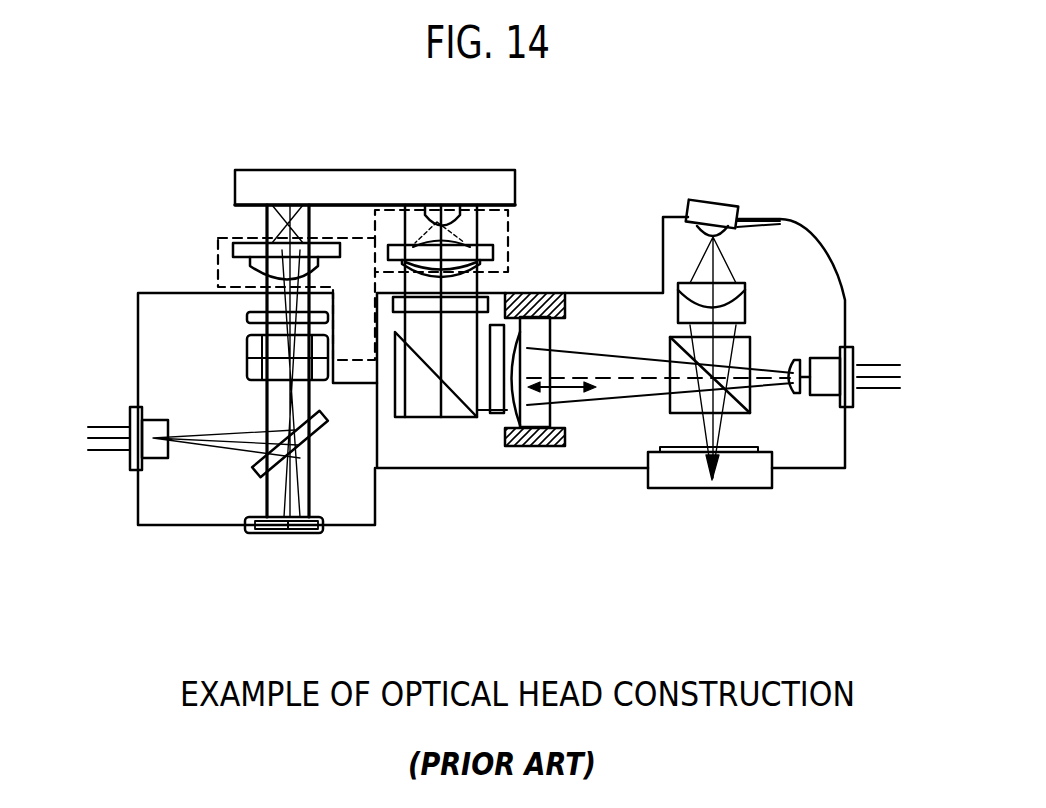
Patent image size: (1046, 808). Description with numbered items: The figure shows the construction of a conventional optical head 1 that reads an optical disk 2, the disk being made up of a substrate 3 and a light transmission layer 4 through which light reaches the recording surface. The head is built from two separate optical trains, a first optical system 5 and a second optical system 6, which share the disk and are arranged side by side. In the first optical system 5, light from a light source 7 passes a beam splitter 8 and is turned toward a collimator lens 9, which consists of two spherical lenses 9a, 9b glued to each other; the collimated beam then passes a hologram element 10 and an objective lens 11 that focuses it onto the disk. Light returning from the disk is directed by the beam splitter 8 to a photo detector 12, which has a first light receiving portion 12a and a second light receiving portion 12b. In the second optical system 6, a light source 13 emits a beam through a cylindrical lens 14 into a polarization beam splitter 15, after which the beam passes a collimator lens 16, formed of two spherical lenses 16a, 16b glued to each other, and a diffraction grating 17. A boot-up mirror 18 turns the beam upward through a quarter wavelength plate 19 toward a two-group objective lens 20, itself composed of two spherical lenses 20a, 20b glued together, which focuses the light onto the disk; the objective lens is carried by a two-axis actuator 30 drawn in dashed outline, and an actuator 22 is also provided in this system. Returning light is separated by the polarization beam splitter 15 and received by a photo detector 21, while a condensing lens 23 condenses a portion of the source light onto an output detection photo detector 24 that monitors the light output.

The optical head 1 is at (786, 148).
The optical disk 2 is at (436, 128).
The substrate 3 is at (495, 170).
The light transmission layer 4 is at (511, 208).
The first optical system 5 is at (96, 548).
The second optical system 6 is at (836, 494).
The light source 7 is at (126, 462).
The beam splitter 8 is at (265, 466).
The collimator lens 9 is at (192, 355).
The spherical lens 9a is at (248, 348).
The spherical lens 9b is at (248, 377).
The hologram element 10 is at (247, 316).
The objective lens 11 is at (233, 252).
The photo detector 12 is at (318, 533).
The first light receiving portion 12a is at (270, 533).
The second light receiving portion 12b is at (310, 537).
The light source 13 is at (850, 405).
The cylindrical lens 14 is at (843, 345).
The polarization beam splitter 15 is at (745, 343).
The collimator lens 16 is at (522, 468).
The spherical lens 16a is at (508, 413).
The spherical lens 16b is at (542, 420).
The diffraction grating 17 is at (488, 423).
The boot-up mirror 18 is at (435, 403).
The 1/4 wavelength plate 19 is at (542, 292).
The 2-group objective lens 20 is at (509, 238).
The spherical lens 20a is at (462, 218).
The spherical lens 20b is at (493, 252).
The photo detector 21 is at (728, 476).
The actuator 22 is at (570, 448).
The condensing lens 23 is at (680, 286).
The output detection photo detector 24 is at (722, 212).
The 2-axis actuator 30 is at (499, 266).